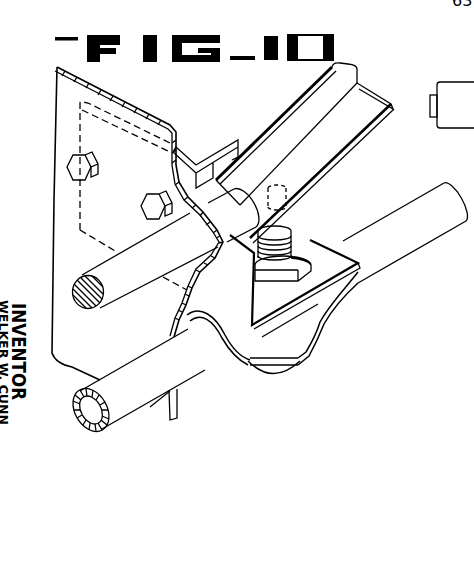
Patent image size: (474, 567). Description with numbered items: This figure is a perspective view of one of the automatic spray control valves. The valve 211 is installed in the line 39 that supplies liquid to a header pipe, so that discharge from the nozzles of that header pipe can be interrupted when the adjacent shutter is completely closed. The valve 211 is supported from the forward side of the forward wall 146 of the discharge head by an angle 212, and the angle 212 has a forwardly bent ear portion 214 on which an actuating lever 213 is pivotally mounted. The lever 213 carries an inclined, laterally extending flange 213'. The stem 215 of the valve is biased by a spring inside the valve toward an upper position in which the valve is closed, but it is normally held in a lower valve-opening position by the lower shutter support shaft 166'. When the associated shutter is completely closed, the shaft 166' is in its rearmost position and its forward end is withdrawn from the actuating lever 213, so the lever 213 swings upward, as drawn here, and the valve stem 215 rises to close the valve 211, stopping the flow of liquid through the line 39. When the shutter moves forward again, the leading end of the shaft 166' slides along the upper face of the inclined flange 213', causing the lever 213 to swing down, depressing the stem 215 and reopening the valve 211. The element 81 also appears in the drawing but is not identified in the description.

The forward wall 146 is at (62, 92).
The lower shutter support shaft 166' is at (166, 263).
The forwardly bent ear portion 214 is at (223, 143).
The actuating lever 213 is at (312, 148).
The inclined, laterally extending flange 213' is at (317, 127).
The stem 215 is at (288, 181).
The angle 212 is at (318, 236).
The valve 211 is at (290, 318).
The line 39 is at (434, 240).
The connector 81 is at (447, 95).